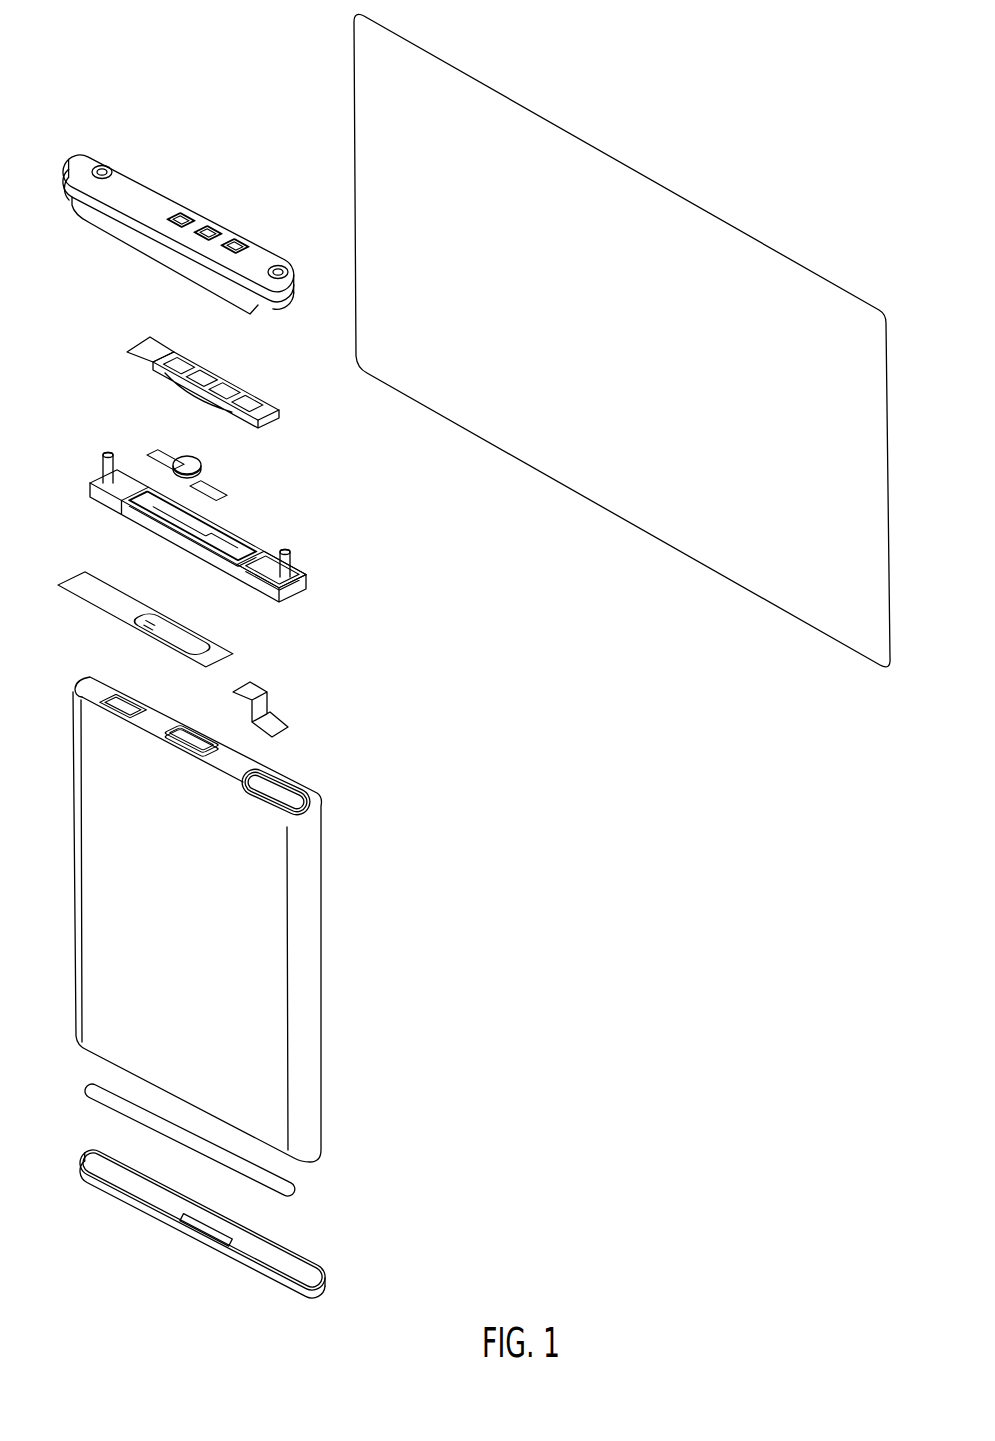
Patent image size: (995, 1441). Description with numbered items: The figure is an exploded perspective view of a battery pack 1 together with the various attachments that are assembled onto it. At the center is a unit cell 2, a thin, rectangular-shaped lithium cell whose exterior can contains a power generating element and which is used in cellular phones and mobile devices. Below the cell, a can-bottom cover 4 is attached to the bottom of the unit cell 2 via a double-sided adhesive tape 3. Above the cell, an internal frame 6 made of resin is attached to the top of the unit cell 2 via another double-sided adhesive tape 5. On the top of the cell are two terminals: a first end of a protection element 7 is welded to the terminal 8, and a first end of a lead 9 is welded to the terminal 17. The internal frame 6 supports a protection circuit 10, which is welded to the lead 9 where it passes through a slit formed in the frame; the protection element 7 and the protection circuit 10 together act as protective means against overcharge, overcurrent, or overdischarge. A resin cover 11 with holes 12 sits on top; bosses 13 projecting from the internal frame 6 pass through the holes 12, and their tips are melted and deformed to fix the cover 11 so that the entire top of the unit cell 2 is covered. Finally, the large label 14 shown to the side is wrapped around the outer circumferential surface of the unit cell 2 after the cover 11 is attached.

The battery pack 1 is at (431, 738).
The unit cell 2 is at (322, 973).
The double-sided adhesive tape 3 is at (302, 1197).
The can-bottom cover 4 is at (323, 1272).
The double-sided adhesive tape 5 is at (210, 648).
The internal frame 6 is at (98, 488).
The protection element 7 is at (204, 474).
The terminal 8 is at (199, 737).
The lead 9 is at (278, 717).
The protection circuit 10 is at (186, 352).
The cover 11 is at (173, 190).
The holes 12 is at (104, 166).
The bosses 13 is at (104, 457).
The label 14 is at (583, 488).
The terminal 17 is at (293, 788).